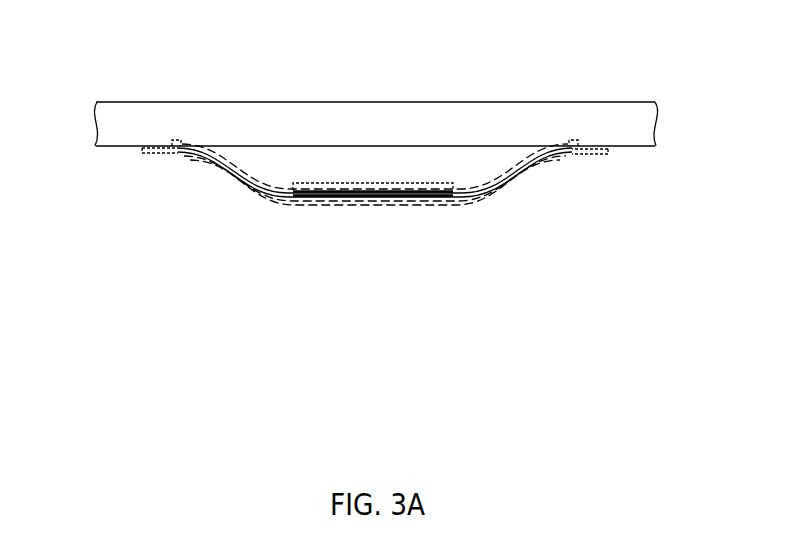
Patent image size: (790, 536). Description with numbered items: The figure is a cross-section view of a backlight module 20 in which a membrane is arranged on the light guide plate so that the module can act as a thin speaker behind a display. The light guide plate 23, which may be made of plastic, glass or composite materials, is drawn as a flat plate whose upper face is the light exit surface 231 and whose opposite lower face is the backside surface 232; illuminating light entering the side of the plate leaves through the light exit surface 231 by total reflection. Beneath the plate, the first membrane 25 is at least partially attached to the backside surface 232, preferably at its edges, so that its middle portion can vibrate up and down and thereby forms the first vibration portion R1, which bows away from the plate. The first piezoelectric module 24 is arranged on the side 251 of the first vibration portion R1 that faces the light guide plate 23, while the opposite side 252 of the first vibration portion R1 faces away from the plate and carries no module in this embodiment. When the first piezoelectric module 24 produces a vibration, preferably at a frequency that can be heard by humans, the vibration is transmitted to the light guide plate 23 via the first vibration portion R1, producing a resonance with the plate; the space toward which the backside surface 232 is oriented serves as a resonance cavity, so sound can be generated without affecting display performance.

The backlight module 20 is at (70, 40).
The light guide plate 23 is at (398, 109).
The light exit surface 231 is at (630, 102).
The backside surface 232 is at (630, 147).
The first piezoelectric module 24 is at (375, 209).
The first membrane 25 is at (408, 199).
The side of the first vibration portion facing the light guide plate 251 is at (245, 191).
The side of the first vibration portion opposite the light guide plate 252 is at (275, 202).
The first vibration portion R1 is at (556, 161).